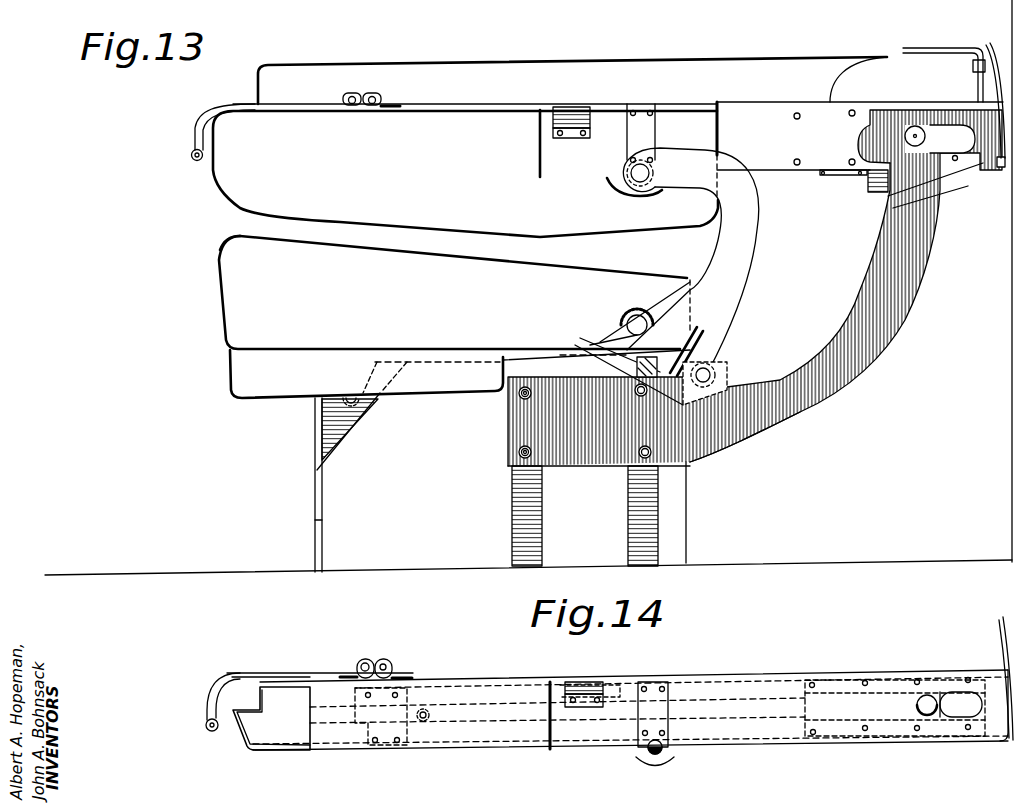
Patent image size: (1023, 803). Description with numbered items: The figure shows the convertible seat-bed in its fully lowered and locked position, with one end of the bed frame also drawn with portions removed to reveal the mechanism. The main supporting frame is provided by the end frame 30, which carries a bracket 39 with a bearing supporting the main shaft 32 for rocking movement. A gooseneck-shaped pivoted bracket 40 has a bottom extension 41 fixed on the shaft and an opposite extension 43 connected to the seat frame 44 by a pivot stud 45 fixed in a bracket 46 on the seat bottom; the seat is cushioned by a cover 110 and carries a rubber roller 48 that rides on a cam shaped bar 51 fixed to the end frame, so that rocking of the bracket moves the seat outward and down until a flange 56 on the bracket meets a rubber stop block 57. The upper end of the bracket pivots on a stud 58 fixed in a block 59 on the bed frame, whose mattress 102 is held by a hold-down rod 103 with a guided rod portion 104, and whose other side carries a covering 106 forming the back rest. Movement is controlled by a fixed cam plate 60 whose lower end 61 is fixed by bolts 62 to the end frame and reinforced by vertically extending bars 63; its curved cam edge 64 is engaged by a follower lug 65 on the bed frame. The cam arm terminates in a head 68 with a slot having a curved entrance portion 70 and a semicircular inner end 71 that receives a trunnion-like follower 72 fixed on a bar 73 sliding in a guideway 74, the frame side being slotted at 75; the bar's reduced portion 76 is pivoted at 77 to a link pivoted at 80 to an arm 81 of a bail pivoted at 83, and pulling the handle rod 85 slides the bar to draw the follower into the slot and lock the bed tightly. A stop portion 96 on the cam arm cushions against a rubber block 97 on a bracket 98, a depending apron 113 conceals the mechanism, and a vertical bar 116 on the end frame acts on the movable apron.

In FIG. 13, the end frame 30 is at (333, 523).
In FIG. 13, the main shaft 32 is at (721, 366).
In FIG. 13, the bracket 39 is at (730, 383).
In FIG. 13, the pivoted bracket 40 is at (729, 301).
In FIG. 13, the bottom extension 41 is at (712, 345).
In FIG. 13, the opposite extension 43 is at (610, 331).
In FIG. 13, the seat frame 44 is at (222, 242).
In FIG. 13, the pivot stud 45 is at (619, 314).
In FIG. 13, the bracket 46 is at (602, 341).
In FIG. 13, the rubber roller 48 is at (362, 398).
In FIG. 13, the cam shaped bar 51 is at (350, 425).
In FIG. 13, the flange 56 is at (652, 356).
In FIG. 13, the rubber stop block 57 is at (632, 364).
In FIG. 13, the stud 58 is at (628, 173).
In FIG. 14, the stud 58 is at (665, 756).
In FIG. 13, the block 59 is at (657, 125).
In FIG. 14, the block 59 is at (646, 754).
In FIG. 13, the cam plate 60 is at (870, 372).
In FIG. 13, the lower end of cam plate 61 is at (600, 464).
In FIG. 13, the bolts 62 is at (521, 397).
In FIG. 13, the vertically extending bars 63 is at (630, 530).
In FIG. 13, the cam edge 64 is at (826, 342).
In FIG. 13, the follower lug 65 is at (868, 189).
In FIG. 13, the head 68 is at (900, 110).
In FIG. 13, the curved entrance portion 70 is at (965, 160).
In FIG. 13, the semicircular inner end 71 is at (904, 134).
In FIG. 13, the trunnion-like follower 72 is at (920, 128).
In FIG. 14, the trunnion-like follower 72 is at (916, 705).
In FIG. 14, the bar 73 is at (848, 690).
In FIG. 14, the guideway 74 is at (834, 725).
In FIG. 14, the slot 75 is at (962, 692).
In FIG. 14, the reduced width portion of bar 76 is at (535, 718).
In FIG. 14, the pivotal connection 77 is at (430, 711).
In FIG. 13, the pivotal connection 80 is at (352, 96).
In FIG. 14, the pivotal connection 80 is at (366, 659).
In FIG. 13, the arm of bail-shaped member 81 is at (290, 103).
In FIG. 14, the arm of bail-shaped member 81 is at (300, 673).
In FIG. 13, the pivot 83 is at (378, 98).
In FIG. 14, the pivot 83 is at (388, 661).
In FIG. 13, the handle rod 85 is at (191, 158).
In FIG. 14, the handle rod 85 is at (206, 730).
In FIG. 13, the stop portion 96 is at (862, 143).
In FIG. 13, the rubber block 97 is at (587, 100).
In FIG. 14, the rubber block 97 is at (588, 682).
In FIG. 13, the bracket 98 is at (573, 138).
In FIG. 14, the bracket 98 is at (590, 707).
In FIG. 13, the mattress 102 is at (646, 63).
In FIG. 13, the hold-down rod 103 is at (938, 40).
In FIG. 13, the rod portion 104 is at (972, 67).
In FIG. 13, the covering 106 is at (238, 186).
In FIG. 13, the cover 110 is at (220, 305).
In FIG. 13, the depending apron 113 is at (228, 377).
In FIG. 13, the vertical bar 116 is at (316, 486).